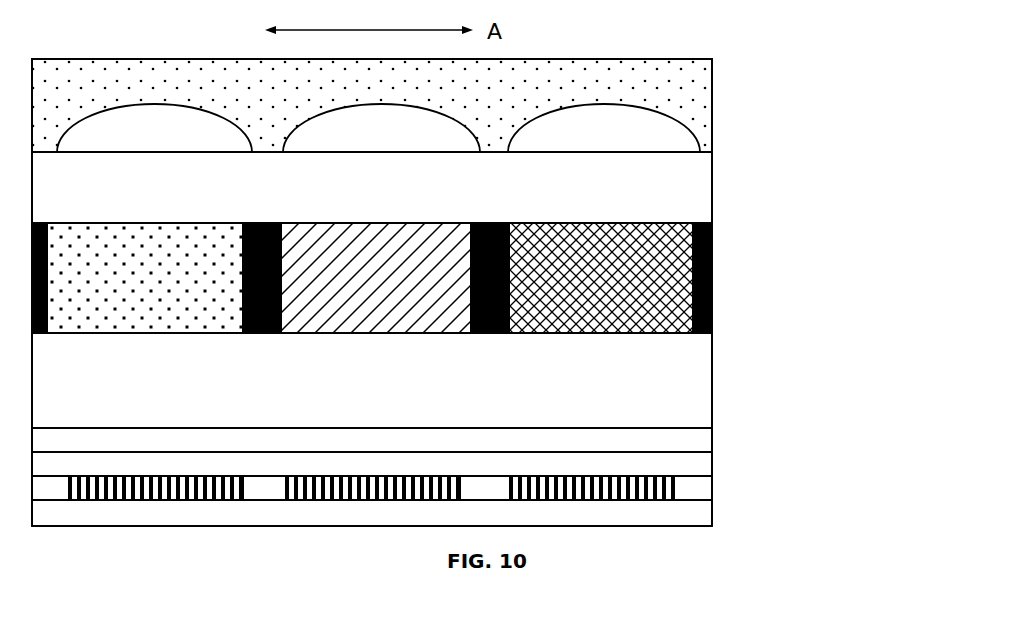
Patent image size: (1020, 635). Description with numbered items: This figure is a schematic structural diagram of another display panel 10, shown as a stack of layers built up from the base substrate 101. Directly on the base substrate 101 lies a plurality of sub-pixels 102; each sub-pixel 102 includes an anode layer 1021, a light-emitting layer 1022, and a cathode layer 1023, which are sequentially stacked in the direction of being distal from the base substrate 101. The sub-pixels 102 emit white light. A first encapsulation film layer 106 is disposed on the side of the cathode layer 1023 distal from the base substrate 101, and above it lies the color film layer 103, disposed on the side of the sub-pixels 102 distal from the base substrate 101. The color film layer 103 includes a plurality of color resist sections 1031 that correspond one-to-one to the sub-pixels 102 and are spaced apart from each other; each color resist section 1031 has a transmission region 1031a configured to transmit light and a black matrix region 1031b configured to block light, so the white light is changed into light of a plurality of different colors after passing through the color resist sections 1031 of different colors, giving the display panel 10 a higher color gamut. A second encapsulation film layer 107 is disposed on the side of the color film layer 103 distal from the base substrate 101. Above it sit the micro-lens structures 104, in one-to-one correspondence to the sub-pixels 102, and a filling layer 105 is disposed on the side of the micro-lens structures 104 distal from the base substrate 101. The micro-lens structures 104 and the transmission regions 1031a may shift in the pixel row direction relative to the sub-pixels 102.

The display panel 10 is at (47, 31).
The base substrate 101 is at (695, 519).
The sub-pixel 102 is at (468, 460).
The anode layer 1021 is at (675, 493).
The light-emitting layer 1022 is at (670, 465).
The cathode layer 1023 is at (675, 443).
The color film layer 103 is at (466, 276).
The color resist section 1031 is at (705, 278).
The transmission region 1031a is at (607, 311).
The black matrix region 1031b is at (702, 289).
The micro-lens structure 104 is at (642, 135).
The filling layer 105 is at (682, 80).
The first encapsulation film layer 106 is at (678, 386).
The second encapsulation film layer 107 is at (682, 192).